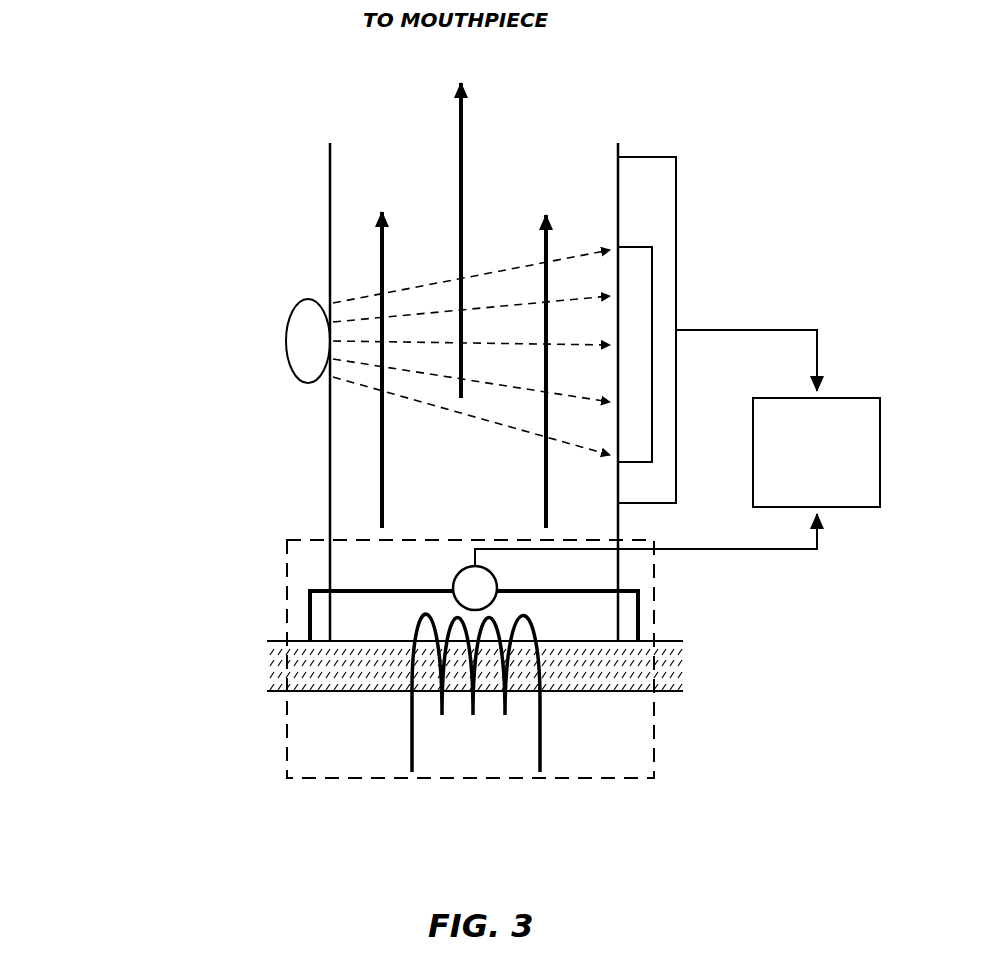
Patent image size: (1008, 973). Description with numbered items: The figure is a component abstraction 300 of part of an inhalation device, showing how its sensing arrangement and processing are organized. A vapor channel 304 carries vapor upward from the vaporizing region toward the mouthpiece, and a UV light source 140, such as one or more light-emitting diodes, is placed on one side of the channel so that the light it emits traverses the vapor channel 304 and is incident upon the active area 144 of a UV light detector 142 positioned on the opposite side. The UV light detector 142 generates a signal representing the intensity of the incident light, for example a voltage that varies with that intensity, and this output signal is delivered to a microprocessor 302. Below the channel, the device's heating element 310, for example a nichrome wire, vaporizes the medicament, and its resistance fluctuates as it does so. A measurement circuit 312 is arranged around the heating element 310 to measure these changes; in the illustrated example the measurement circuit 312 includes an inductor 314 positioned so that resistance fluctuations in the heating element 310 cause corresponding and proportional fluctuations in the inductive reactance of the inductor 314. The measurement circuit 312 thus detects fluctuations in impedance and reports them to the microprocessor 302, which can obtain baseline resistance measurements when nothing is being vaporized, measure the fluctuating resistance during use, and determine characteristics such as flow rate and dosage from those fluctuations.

The component abstraction 300 is at (182, 763).
The vapor channel 304 is at (360, 137).
The UV light source 140 is at (290, 315).
The UV light detector 142 is at (665, 157).
The active area 144 is at (645, 280).
The microprocessor 302 is at (677, 448).
The heating element 310 is at (678, 687).
The measurement circuit 312 is at (653, 778).
The inductor 314 is at (413, 748).